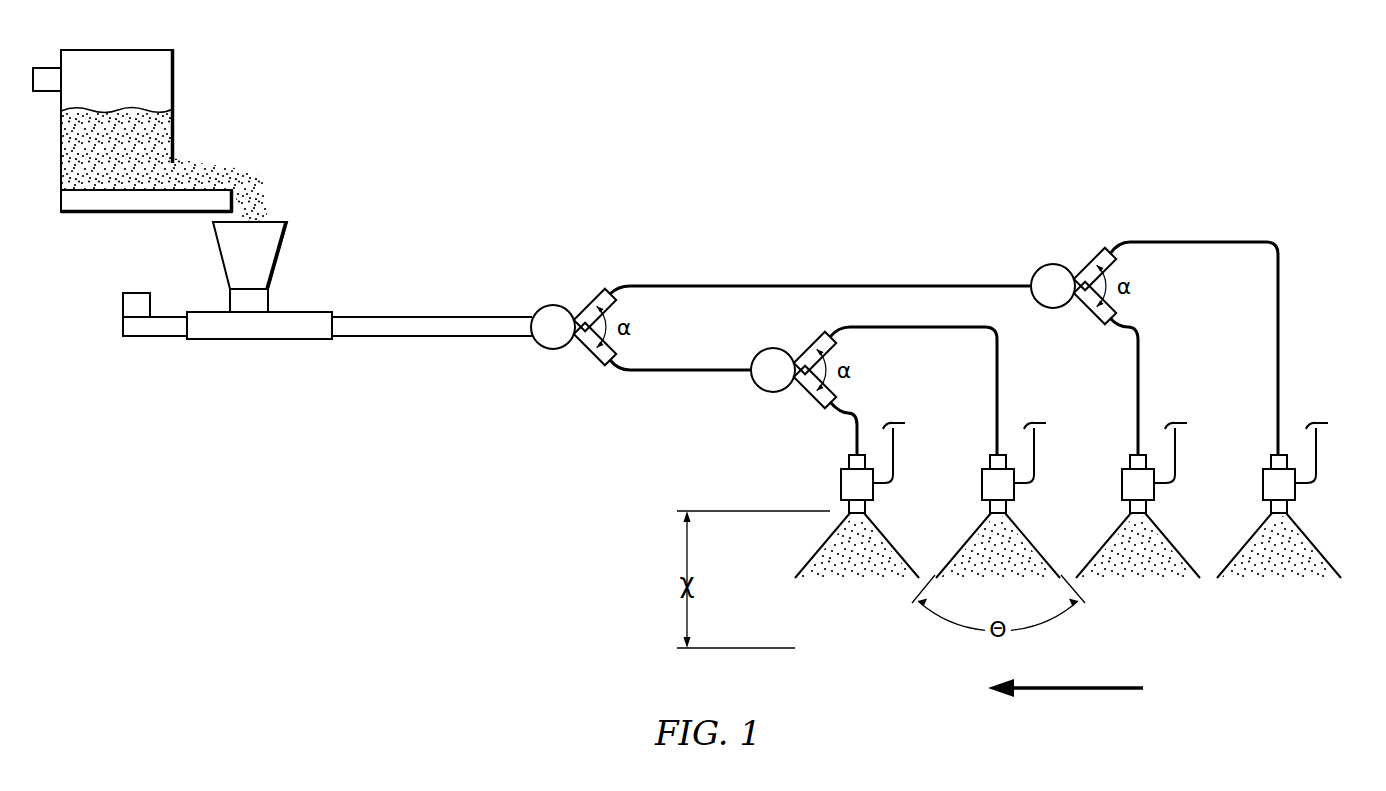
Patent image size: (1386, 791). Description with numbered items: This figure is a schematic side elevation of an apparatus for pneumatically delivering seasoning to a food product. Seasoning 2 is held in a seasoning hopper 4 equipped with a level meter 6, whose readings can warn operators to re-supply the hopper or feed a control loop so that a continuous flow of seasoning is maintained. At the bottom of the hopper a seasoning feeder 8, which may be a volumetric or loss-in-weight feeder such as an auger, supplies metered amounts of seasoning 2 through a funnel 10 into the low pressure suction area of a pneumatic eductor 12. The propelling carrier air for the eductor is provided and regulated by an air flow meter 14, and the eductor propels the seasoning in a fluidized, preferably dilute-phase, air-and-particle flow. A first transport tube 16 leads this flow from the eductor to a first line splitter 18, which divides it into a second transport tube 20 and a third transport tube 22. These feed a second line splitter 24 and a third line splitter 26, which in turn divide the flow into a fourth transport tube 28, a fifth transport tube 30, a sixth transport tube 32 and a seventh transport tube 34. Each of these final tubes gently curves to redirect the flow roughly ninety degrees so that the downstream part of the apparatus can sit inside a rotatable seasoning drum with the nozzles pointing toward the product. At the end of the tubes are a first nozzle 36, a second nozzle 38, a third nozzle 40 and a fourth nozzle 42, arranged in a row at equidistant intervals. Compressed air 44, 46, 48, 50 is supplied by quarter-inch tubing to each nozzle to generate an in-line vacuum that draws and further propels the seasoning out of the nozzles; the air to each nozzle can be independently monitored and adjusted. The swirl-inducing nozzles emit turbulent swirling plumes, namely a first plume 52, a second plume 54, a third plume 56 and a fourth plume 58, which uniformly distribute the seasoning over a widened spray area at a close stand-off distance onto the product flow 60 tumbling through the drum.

The seasoning 2 is at (160, 132).
The seasoning hopper 4 is at (176, 82).
The level meter 6 is at (48, 69).
The seasoning feeder 8 is at (127, 214).
The funnel 10 is at (282, 253).
The pneumatic eductor 12 is at (210, 341).
The air flow meter 14 is at (122, 304).
The first transport tube 16 is at (432, 317).
The first line splitter 18 is at (548, 306).
The second transport tube 20 is at (694, 284).
The third transport tube 22 is at (666, 370).
The second line splitter 24 is at (1045, 266).
The third line splitter 26 is at (763, 392).
The fourth transport tube 28 is at (1196, 242).
The fifth transport tube 30 is at (1140, 352).
The sixth transport tube 32 is at (1000, 367).
The seventh transport tube 34 is at (855, 437).
The first nozzle 36 is at (1262, 488).
The second nozzle 38 is at (1122, 488).
The third nozzle 40 is at (982, 488).
The fourth nozzle 42 is at (840, 482).
The compressed air for first nozzle 44 is at (1318, 448).
The compressed air for second nozzle 46 is at (1179, 448).
The compressed air for third nozzle 48 is at (1038, 448).
The compressed air for fourth nozzle 50 is at (897, 448).
The first plume 52 is at (1313, 537).
The second plume 54 is at (1172, 537).
The third plume 56 is at (1026, 535).
The fourth plume 58 is at (890, 538).
The product flow 60 is at (1098, 692).